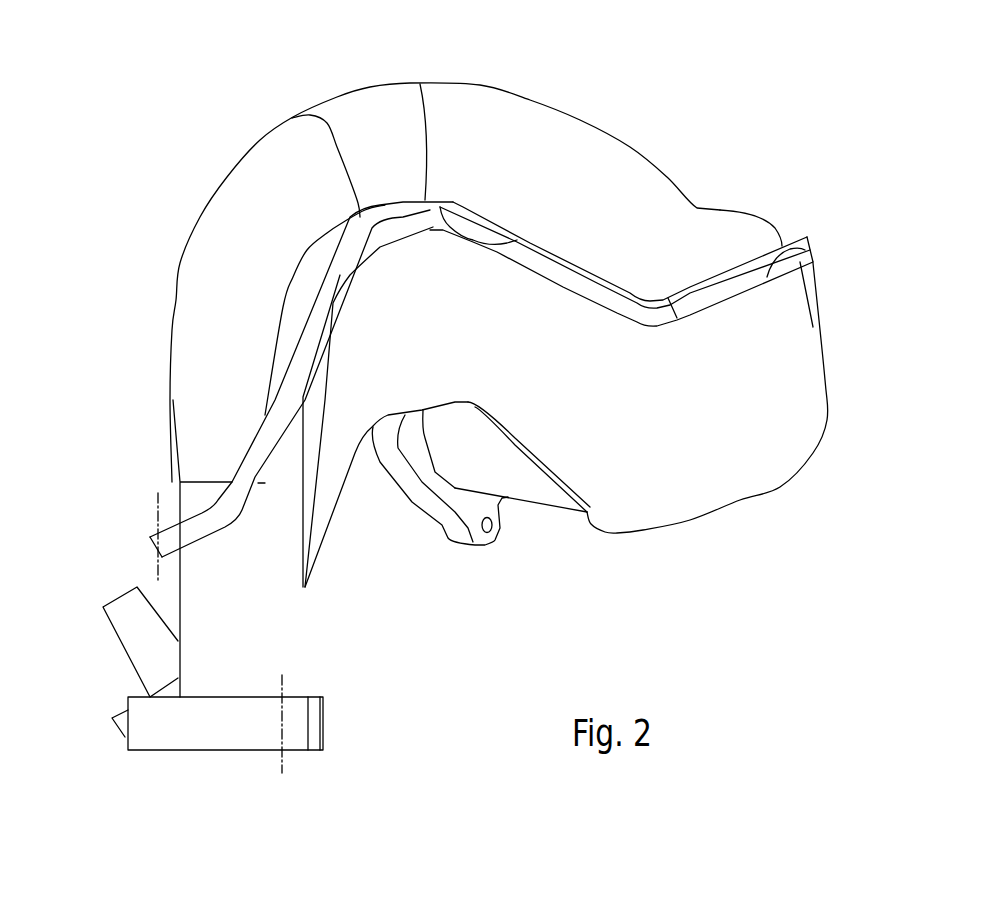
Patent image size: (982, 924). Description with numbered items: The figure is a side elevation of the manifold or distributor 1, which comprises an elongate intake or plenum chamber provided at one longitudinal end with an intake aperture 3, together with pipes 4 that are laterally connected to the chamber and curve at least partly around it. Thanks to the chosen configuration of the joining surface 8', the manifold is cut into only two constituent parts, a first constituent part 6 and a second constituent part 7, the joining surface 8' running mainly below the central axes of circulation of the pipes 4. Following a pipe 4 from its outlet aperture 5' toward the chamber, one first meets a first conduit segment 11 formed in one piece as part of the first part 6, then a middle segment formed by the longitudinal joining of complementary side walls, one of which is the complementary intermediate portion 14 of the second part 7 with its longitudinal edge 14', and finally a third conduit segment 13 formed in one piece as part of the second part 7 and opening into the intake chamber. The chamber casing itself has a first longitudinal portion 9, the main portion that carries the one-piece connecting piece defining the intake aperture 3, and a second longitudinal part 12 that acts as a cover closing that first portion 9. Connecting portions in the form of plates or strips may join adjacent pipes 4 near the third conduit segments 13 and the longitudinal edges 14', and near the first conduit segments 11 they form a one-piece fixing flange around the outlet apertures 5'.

The manifold 1 is at (740, 566).
The intake aperture 3 is at (418, 493).
The pipe 4 is at (120, 269).
The outlet aperture 5' is at (213, 719).
The first constituent part 6 is at (522, 482).
The second constituent part 7 is at (490, 107).
The joining surface 8' is at (481, 310).
The first longitudinal portion 9 is at (757, 472).
The first conduit segment 11 is at (275, 632).
The second longitudinal part 12 is at (755, 230).
The third conduit segment 13 is at (620, 155).
The complementary intermediate portion 14 is at (259, 171).
The longitudinal edge 14' is at (255, 310).